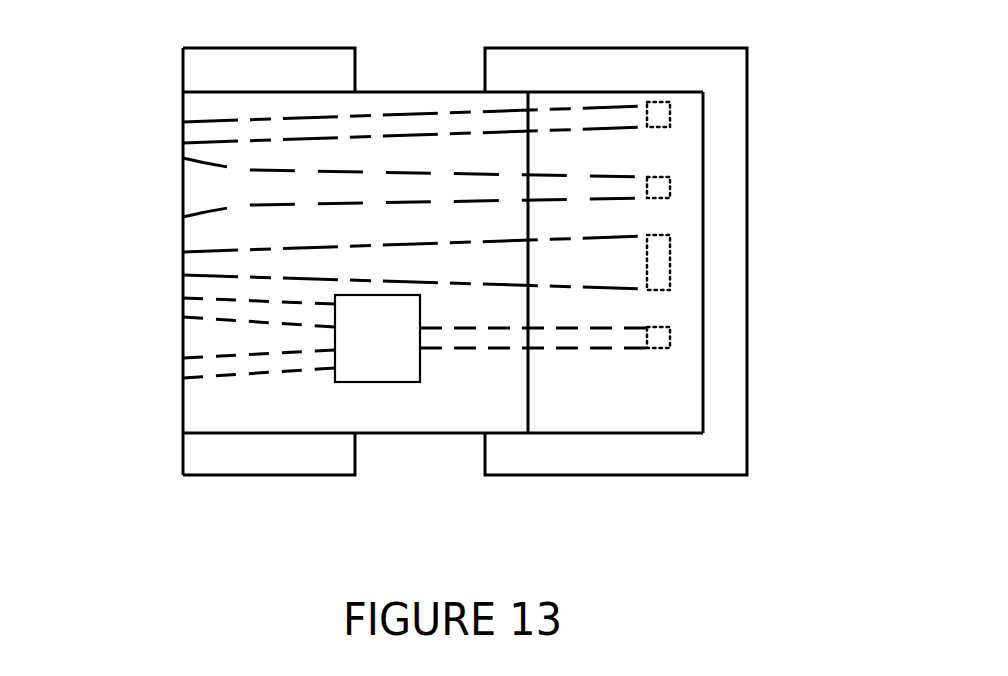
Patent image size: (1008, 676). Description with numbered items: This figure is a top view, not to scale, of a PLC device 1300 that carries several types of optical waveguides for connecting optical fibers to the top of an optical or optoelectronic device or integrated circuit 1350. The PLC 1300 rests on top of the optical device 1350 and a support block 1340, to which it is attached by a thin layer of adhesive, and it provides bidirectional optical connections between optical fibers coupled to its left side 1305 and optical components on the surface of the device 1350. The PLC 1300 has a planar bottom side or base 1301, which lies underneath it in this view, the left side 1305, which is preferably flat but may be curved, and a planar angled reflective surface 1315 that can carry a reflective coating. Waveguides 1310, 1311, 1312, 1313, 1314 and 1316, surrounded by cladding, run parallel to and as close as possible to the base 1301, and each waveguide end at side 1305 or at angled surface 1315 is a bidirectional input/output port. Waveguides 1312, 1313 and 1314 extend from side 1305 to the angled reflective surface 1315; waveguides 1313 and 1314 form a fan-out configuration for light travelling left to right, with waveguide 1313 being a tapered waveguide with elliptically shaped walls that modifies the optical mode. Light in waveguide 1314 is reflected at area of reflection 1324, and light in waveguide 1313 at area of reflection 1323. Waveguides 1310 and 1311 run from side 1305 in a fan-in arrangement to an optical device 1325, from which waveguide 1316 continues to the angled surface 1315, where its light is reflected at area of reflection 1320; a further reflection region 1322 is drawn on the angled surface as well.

The PLC device 1300 is at (495, 421).
The planar bottom side or base 1301 is at (420, 433).
The left side 1305 is at (183, 408).
The waveguide 1310 is at (195, 370).
The waveguide 1311 is at (195, 307).
The waveguide 1312 is at (195, 263).
The tapered waveguide 1313 is at (195, 192).
The waveguide 1314 is at (200, 135).
The planar angled reflective surface 1315 is at (632, 412).
The waveguide 1316 is at (545, 340).
The area of reflection 1320 is at (670, 345).
The detector 1322 is at (670, 275).
The area of reflection 1323 is at (670, 192).
The area of reflection 1324 is at (670, 110).
The optical device 1325 is at (408, 349).
The support block 1340 is at (225, 477).
The optical or optoelectronic device or integrated circuit 1350 is at (582, 478).